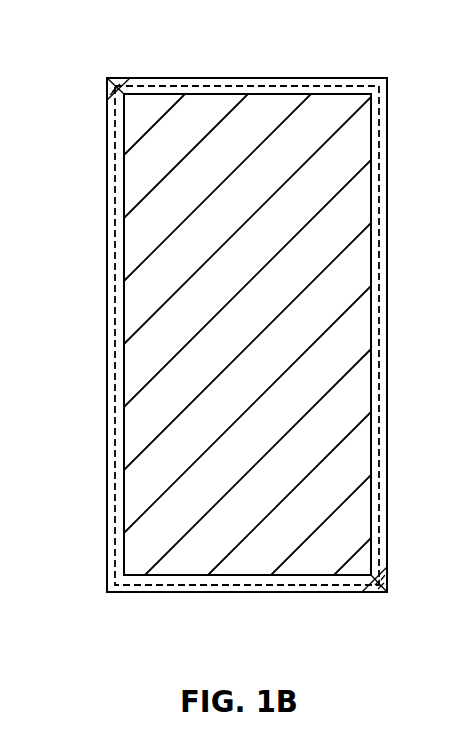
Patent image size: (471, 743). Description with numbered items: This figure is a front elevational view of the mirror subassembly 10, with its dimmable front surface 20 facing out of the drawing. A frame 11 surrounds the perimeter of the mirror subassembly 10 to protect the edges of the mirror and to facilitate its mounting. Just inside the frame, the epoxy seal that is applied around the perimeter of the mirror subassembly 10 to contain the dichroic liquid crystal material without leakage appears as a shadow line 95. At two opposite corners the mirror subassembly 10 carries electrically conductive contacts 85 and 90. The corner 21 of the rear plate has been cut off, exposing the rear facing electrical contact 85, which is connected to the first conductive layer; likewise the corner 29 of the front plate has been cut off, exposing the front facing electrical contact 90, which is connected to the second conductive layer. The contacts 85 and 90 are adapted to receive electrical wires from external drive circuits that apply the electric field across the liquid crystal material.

The mirror subassembly 10 is at (234, 338).
The frame 11 is at (107, 212).
The front surface 20 is at (124, 308).
The corner 21 is at (122, 72).
The corner 29 is at (370, 602).
The electrically conductive contact 85 is at (110, 93).
The electrically conductive contact 90 is at (387, 592).
The epoxy seal 95 is at (115, 372).